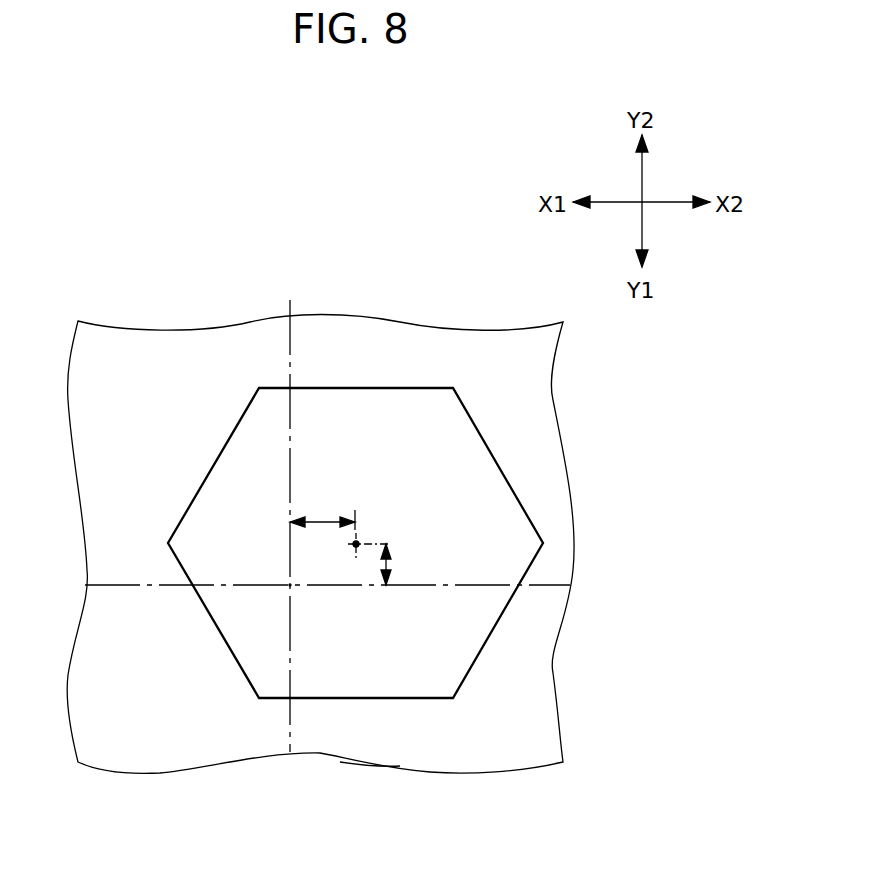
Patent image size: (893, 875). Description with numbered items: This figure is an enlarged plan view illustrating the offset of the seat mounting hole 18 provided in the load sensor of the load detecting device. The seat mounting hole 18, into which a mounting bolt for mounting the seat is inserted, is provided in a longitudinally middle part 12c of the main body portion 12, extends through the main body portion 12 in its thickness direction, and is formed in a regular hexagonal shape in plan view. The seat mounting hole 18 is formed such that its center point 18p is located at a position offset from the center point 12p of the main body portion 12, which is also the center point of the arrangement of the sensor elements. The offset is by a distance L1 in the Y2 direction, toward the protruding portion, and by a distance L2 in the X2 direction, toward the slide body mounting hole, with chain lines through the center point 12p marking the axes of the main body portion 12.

The main body portion 12 is at (250, 338).
The seat mounting hole 18 is at (399, 388).
The center point of the seat mounting hole 18p is at (357, 543).
The center point of the main body portion 12p is at (290, 586).
The longitudinally middle part 12c is at (373, 742).
The distance L1 is at (387, 563).
The distance L2 is at (322, 521).